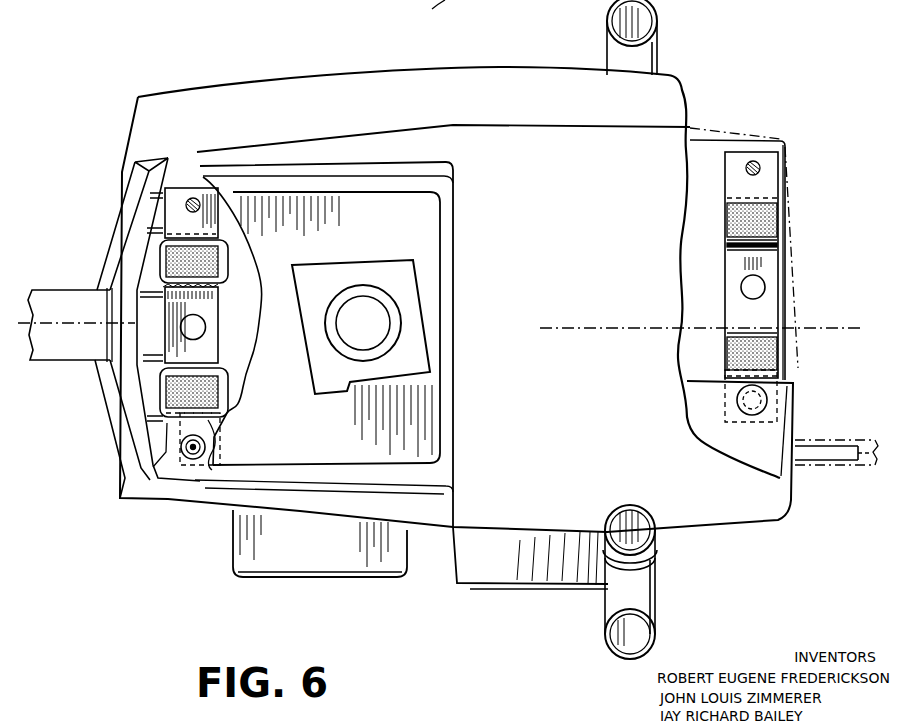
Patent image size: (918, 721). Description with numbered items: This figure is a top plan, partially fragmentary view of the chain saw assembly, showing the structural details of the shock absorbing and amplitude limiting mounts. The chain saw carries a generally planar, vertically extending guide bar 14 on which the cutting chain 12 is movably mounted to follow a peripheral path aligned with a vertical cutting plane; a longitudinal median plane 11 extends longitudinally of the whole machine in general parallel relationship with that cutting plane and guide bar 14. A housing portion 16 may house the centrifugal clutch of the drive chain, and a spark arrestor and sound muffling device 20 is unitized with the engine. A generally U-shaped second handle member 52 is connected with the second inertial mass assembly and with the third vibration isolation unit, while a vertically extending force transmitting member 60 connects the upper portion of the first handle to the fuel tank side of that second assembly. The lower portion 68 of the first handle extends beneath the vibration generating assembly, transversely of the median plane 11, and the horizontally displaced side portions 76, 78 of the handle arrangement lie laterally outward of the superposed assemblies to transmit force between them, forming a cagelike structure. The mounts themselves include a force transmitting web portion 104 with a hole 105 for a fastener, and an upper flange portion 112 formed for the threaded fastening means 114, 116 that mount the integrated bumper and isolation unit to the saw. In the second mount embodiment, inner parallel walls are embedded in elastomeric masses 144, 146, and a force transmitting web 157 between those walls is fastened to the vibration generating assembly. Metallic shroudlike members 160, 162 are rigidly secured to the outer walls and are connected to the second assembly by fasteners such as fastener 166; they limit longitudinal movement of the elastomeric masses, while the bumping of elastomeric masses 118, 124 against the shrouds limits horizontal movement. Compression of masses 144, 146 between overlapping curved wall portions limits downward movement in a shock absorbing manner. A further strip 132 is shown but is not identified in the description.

The longitudinal median plane 11 is at (591, 328).
The cutting chain 12 is at (841, 455).
The guide bar 14 is at (868, 440).
The housing portion 16 is at (533, 568).
The spark arrestor and sound muffling device 20 is at (317, 560).
The second handle member 52 is at (45, 290).
The force transmitting member 60 is at (657, 552).
The lower portion of handle member 68 is at (650, 586).
The side portion of handle arrangement 76 is at (659, 22).
The side portion of handle arrangement 78 is at (657, 652).
The force transmitting web portion 104 is at (768, 262).
The hole 105 is at (741, 290).
The upper flange portion 112 is at (770, 178).
The threaded fastening means 114 is at (765, 398).
The threaded fastening means 116 is at (760, 166).
The elastomeric mass 118 is at (770, 350).
The elastomeric mass 124 is at (770, 218).
The strip 132 is at (727, 243).
The elastomeric mass 144 is at (173, 395).
The elastomeric mass 146 is at (210, 260).
The force transmitting web 157 is at (210, 322).
The metallic shroudlike member 160 is at (228, 380).
The metallic shroudlike member 162 is at (183, 195).
The fastener 166 is at (186, 208).